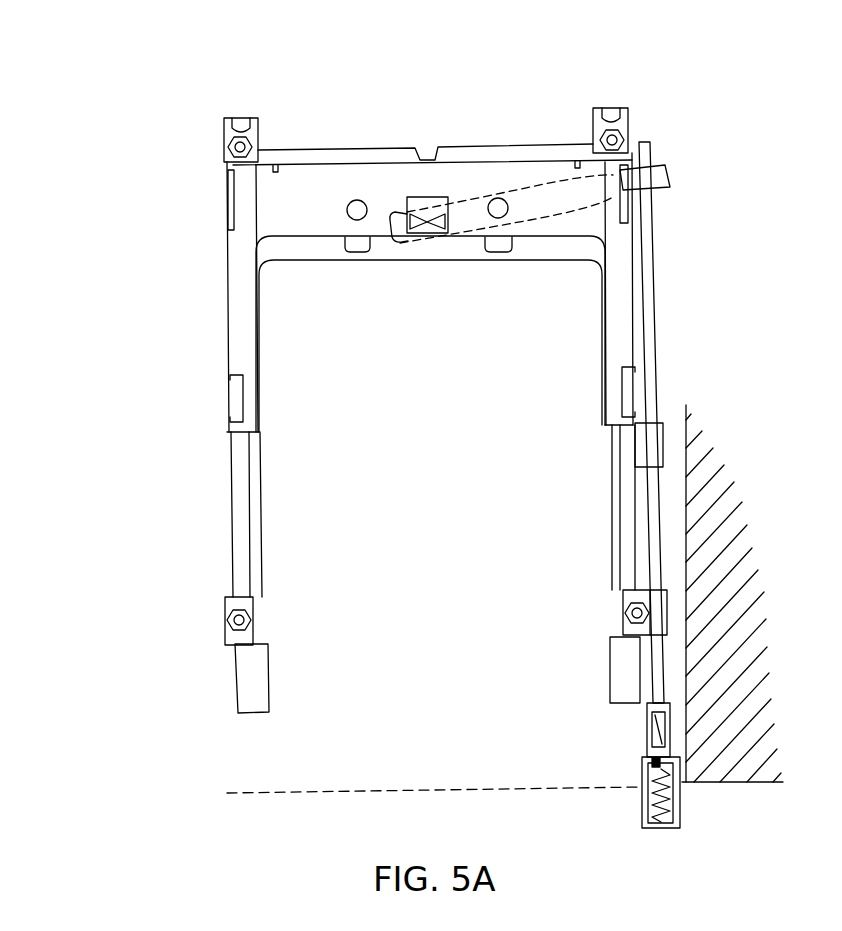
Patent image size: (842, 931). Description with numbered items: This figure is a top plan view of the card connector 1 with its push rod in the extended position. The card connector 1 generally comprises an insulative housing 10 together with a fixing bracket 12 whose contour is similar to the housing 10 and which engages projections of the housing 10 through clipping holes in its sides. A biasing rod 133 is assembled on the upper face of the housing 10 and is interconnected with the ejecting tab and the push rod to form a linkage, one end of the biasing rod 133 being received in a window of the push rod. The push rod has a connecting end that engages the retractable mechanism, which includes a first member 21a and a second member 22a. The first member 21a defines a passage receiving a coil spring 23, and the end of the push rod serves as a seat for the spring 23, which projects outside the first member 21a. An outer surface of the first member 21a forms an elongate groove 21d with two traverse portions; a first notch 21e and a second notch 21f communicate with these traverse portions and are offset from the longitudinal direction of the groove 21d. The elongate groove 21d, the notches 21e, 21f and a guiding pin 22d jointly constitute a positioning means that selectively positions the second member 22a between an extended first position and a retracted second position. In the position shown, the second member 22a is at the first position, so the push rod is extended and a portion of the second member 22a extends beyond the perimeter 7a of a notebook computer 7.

The card connector 1 is at (226, 103).
The fixing bracket 12 is at (308, 178).
The biasing rod 133 is at (527, 193).
The insulative housing 10 is at (631, 124).
The first member 21a is at (662, 712).
The notebook computer 7 is at (725, 783).
The perimeter 7a is at (393, 792).
The elongate groove 21d is at (655, 762).
The second notch 21f is at (660, 758).
The first notch 21e is at (652, 763).
The guiding pin 22d is at (648, 765).
The coil spring 23 is at (648, 787).
The second member 22a is at (643, 790).